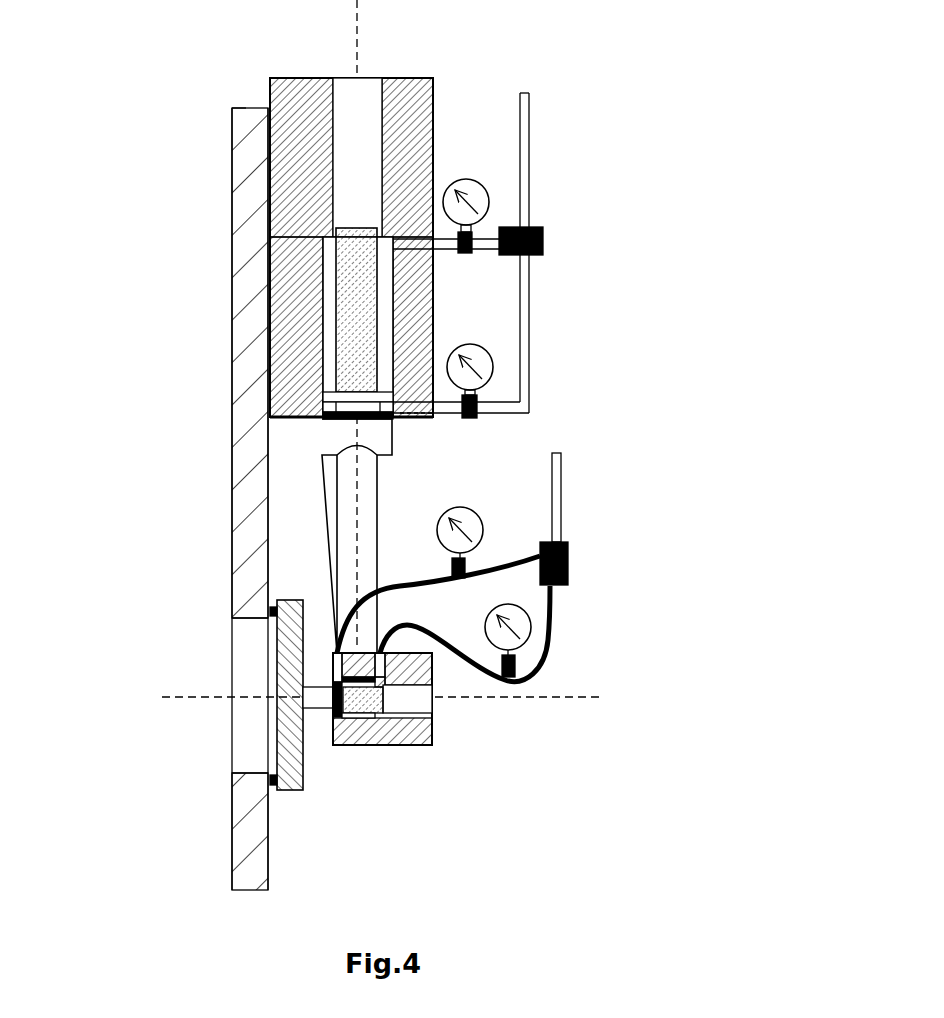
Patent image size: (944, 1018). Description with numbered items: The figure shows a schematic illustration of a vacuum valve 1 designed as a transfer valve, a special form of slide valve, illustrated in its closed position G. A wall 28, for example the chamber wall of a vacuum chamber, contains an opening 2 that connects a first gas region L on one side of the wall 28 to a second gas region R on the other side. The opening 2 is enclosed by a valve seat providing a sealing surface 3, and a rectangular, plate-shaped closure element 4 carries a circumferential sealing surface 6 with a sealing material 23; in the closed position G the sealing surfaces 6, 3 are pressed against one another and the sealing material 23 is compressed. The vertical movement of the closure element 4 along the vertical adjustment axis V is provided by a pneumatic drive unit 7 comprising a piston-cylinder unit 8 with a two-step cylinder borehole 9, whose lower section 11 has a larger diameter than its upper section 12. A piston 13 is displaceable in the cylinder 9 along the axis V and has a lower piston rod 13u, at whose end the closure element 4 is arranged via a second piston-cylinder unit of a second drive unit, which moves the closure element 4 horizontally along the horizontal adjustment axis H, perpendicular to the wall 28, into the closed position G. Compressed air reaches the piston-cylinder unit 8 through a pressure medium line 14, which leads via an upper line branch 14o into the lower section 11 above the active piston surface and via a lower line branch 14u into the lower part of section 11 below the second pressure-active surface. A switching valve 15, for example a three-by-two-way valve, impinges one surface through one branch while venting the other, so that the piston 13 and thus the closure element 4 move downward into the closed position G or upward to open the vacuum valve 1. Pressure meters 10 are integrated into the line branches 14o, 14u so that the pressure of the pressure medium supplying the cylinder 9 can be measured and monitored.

The vacuum valve 1 is at (290, 233).
The opening 2 is at (225, 727).
The sealing surface 3 is at (191, 831).
The closure element 4 is at (210, 695).
The sealing surface 6 is at (342, 754).
The drive unit 7 is at (518, 260).
The piston-cylinder unit 8 is at (290, 248).
The cylinder borehole 9 is at (290, 248).
The pressure meter 10 is at (485, 199).
The lower section of the borehole 11 is at (408, 327).
The upper section of the borehole 12 is at (347, 175).
The piston 13 is at (408, 323).
The piston rod 13u is at (363, 482).
The pressure medium line 14 is at (520, 113).
The upper line branch 14o is at (513, 289).
The lower line branch 14u is at (513, 412).
The switching valve 15 is at (551, 322).
The sealing material 23 is at (177, 499).
The wall 28 is at (186, 363).
The vertical adjustment axis V is at (327, 325).
The horizontal adjustment axis H is at (323, 722).
The closed position G is at (188, 695).
The first gas region L is at (66, 809).
The second gas region R is at (640, 804).